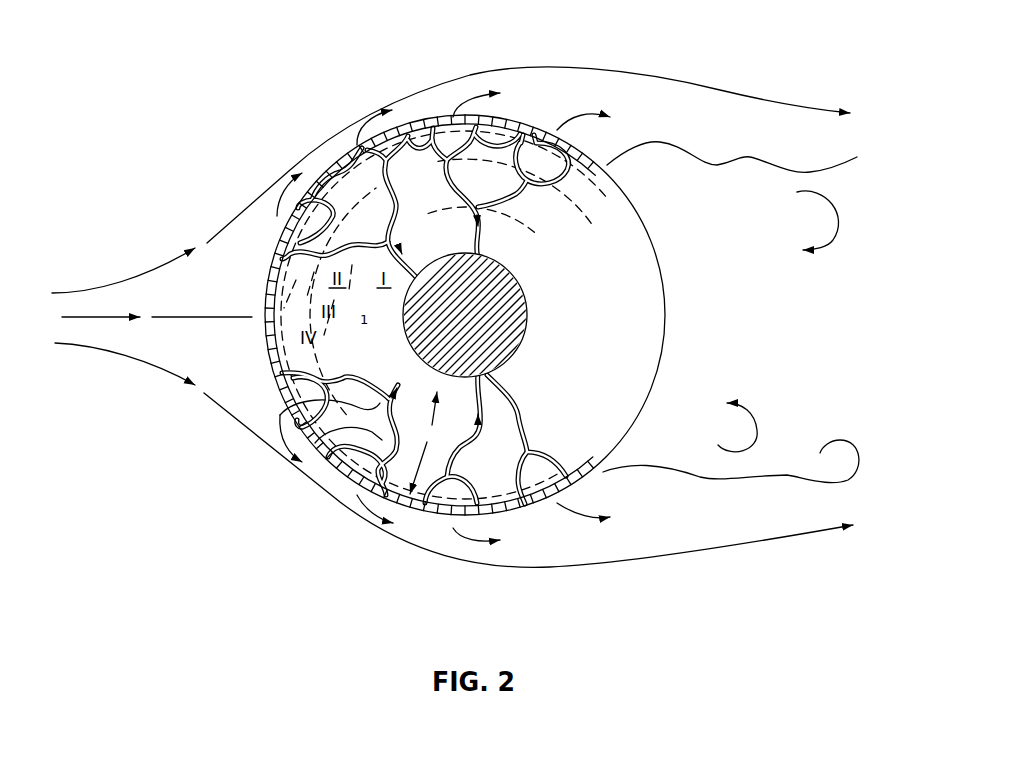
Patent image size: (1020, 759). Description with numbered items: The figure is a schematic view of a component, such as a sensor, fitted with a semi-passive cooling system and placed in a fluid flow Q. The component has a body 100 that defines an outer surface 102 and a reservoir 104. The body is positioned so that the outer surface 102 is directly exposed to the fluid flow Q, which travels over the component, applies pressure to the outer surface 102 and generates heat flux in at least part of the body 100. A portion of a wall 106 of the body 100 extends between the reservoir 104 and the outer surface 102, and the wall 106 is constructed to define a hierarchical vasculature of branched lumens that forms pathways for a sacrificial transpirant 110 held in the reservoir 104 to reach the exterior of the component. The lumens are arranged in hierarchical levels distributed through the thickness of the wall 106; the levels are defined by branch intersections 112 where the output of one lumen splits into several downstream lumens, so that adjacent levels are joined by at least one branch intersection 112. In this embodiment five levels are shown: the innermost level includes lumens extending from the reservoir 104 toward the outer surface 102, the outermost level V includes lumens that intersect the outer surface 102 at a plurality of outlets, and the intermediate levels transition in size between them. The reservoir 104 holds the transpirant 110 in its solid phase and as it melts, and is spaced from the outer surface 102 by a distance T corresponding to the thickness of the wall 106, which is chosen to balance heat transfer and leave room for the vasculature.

The body 100 is at (658, 207).
The outer surface 102 is at (530, 130).
The reservoir 104 is at (527, 295).
The wall 106 is at (625, 360).
The sacrificial transpirant 110 is at (490, 320).
The branch intersection 112 is at (336, 466).
The fluid flow Q is at (115, 288).
The level V is at (270, 288).
The distance T is at (423, 443).